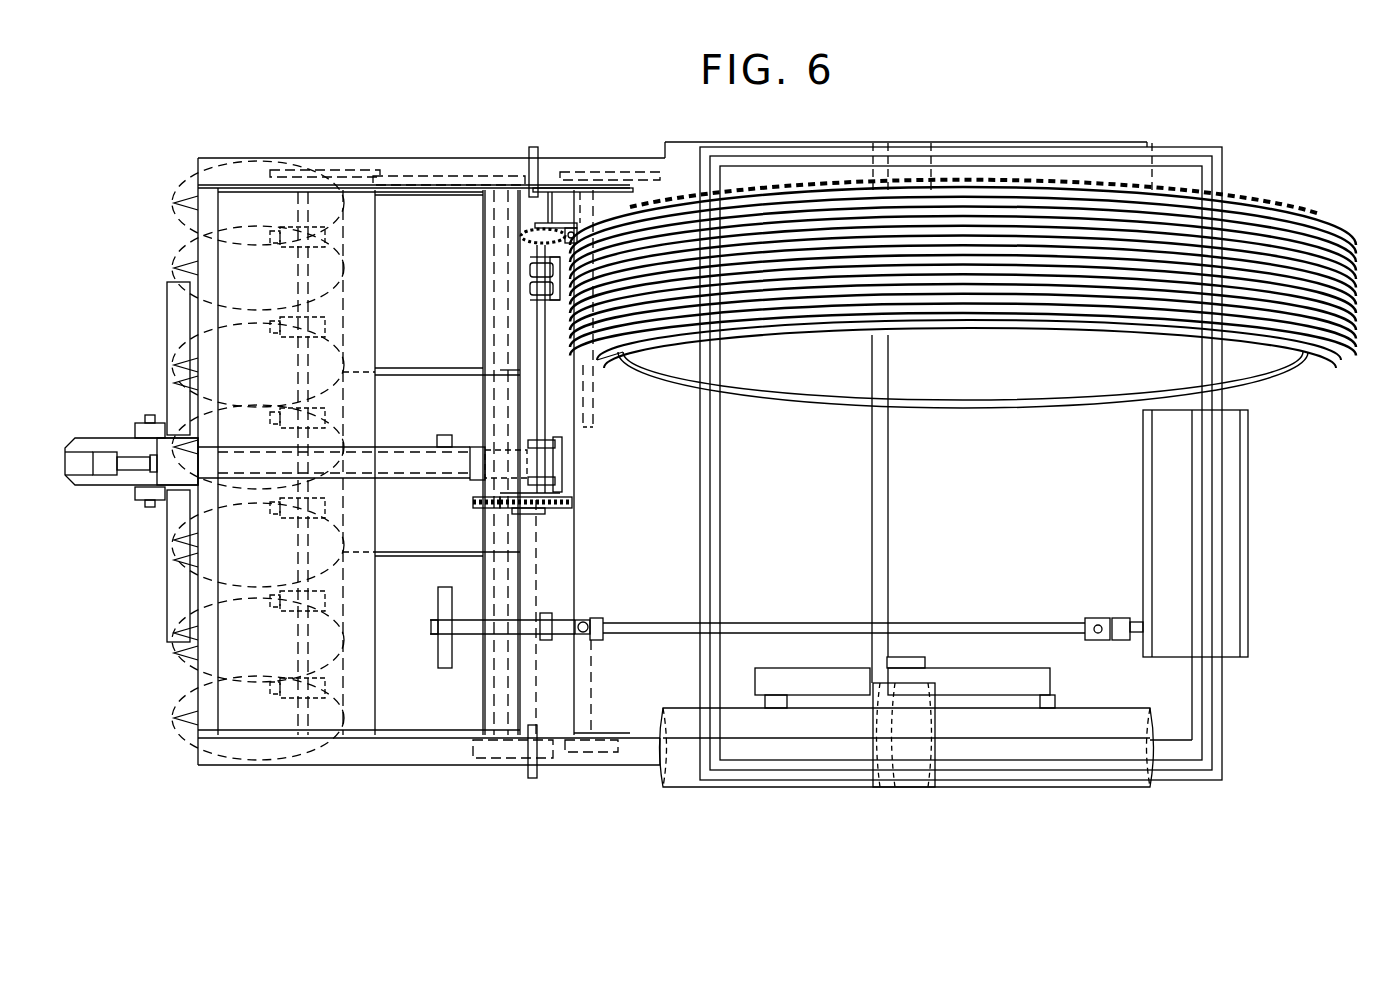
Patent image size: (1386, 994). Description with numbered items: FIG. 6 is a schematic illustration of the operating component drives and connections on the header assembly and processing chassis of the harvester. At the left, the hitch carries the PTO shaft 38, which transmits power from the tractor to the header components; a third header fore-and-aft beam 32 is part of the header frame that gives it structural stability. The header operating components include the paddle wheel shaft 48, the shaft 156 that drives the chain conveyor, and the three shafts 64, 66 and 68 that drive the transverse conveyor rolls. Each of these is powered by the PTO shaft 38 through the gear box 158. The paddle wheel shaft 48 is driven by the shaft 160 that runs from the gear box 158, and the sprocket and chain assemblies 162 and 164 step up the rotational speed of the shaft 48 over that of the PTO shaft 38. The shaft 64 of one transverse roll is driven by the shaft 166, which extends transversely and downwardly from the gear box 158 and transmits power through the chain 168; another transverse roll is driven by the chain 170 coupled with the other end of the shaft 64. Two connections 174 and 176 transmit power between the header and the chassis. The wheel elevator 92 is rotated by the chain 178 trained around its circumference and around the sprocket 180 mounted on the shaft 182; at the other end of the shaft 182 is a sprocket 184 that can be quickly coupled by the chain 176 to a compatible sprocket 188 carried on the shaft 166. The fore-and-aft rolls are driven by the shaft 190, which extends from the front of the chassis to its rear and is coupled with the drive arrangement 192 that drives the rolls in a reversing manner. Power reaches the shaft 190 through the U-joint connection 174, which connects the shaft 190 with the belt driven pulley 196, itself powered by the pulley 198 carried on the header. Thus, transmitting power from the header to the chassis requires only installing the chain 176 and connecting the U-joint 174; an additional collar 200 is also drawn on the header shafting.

The third header fore-and-aft beam 32 is at (373, 446).
The PTO shaft 38 is at (80, 462).
The paddle wheel shaft 48 is at (298, 195).
The shaft 64 is at (538, 760).
The shaft 66 is at (543, 185).
The shaft 68 is at (590, 754).
The wheel elevator 92 is at (1277, 200).
The shaft 156 is at (500, 762).
The gear box 158 is at (487, 468).
The shaft 160 is at (487, 300).
The sprocket and chain assembly 162 is at (426, 147).
The sprocket and chain assembly 164 is at (333, 152).
The shaft 166 is at (485, 680).
The chain 168 is at (473, 746).
The chain 170 is at (560, 186).
The U-joint connection 174 is at (585, 619).
The chain 176 is at (513, 508).
The chain 178 is at (643, 208).
The sprocket 180 is at (560, 230).
The shaft 182 is at (540, 375).
The sprocket 184 is at (565, 498).
The sprocket 188 is at (475, 503).
The shaft 190 is at (815, 622).
The drive arrangement 192 is at (1256, 512).
The belt driven pulley 196 is at (435, 655).
The pulley 198 is at (437, 443).
The collar 200 is at (447, 435).